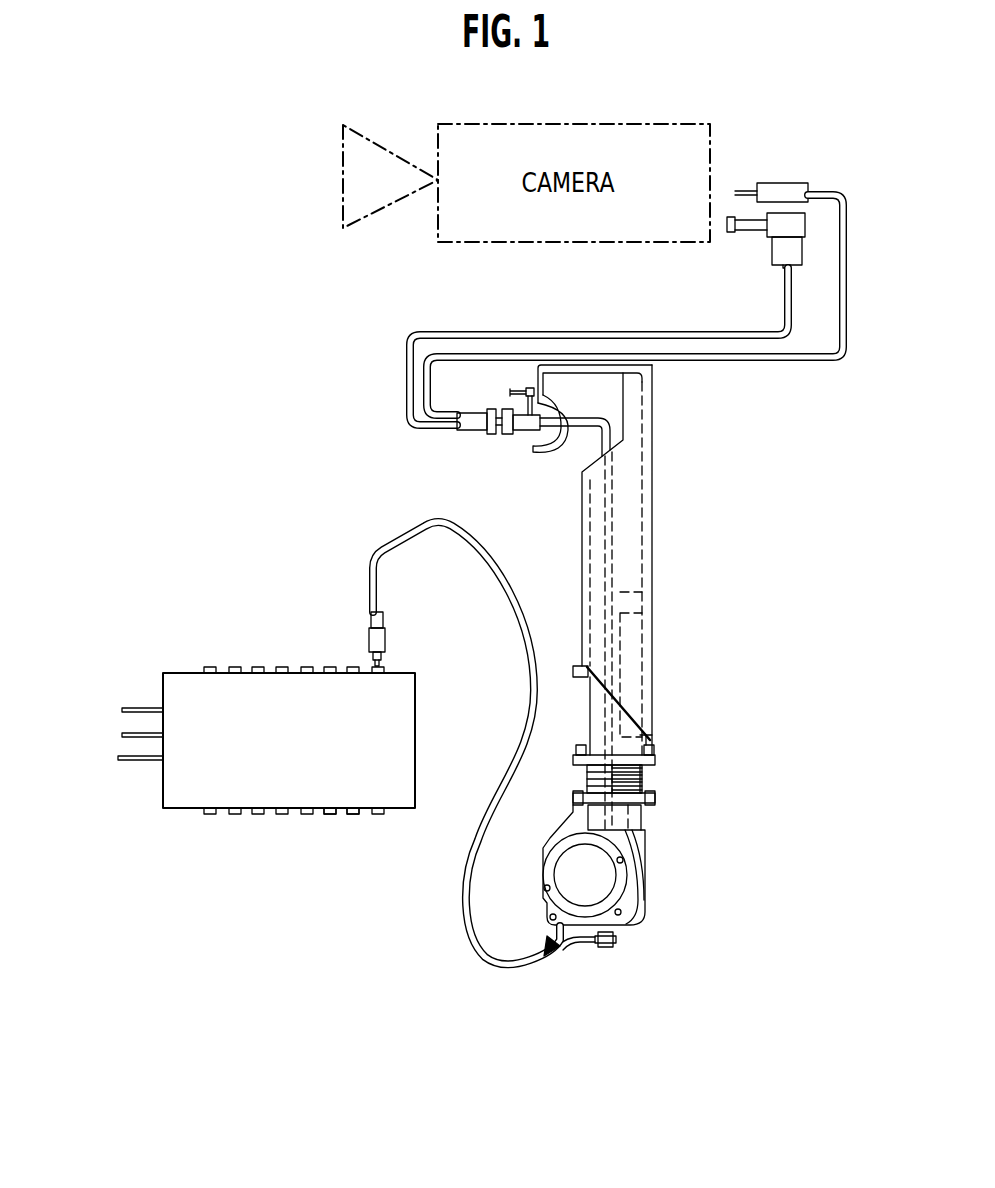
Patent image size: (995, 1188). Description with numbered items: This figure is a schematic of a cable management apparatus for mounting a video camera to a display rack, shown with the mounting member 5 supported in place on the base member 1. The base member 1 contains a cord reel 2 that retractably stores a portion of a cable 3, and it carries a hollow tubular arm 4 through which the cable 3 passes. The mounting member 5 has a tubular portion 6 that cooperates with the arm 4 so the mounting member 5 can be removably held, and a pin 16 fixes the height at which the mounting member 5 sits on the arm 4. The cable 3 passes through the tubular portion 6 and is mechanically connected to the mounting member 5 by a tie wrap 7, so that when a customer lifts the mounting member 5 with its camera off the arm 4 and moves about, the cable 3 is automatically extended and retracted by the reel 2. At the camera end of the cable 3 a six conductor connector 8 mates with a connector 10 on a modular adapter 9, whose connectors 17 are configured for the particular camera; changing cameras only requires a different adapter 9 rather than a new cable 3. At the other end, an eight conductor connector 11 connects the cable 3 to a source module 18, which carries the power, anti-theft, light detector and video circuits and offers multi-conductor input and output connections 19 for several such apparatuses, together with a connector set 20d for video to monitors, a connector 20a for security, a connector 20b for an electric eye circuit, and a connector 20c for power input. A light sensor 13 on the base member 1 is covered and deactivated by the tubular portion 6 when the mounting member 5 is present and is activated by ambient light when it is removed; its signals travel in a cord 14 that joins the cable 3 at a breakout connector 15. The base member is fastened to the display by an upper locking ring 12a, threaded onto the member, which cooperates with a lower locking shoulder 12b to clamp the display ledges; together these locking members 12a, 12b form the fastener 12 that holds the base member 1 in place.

The base member 1 is at (645, 860).
The cord reel 2 is at (565, 878).
The cable 3 is at (603, 720).
The hollow tubular arm 4 is at (648, 573).
The mounting member 5 is at (590, 365).
The tubular portion 6 is at (652, 522).
The tie wrap 7 is at (528, 388).
The six conductor connector 8 is at (525, 436).
The modular adapter 9 is at (763, 340).
The connector 10 is at (490, 432).
The eight conductor connector 11 is at (386, 640).
The coupling 12 is at (588, 778).
The upper locking ring 12a is at (655, 760).
The lower locking shoulder 12b is at (655, 798).
The light sensor 13 is at (650, 738).
The cord 14 is at (645, 925).
The breakout connector 15 is at (562, 952).
The pin 16 is at (580, 666).
The connectors 17 is at (781, 214).
The source module 18 is at (416, 742).
The input and output connections 19 is at (234, 667).
The connector 20a is at (122, 708).
The connector 20b is at (122, 735).
The connector 20c is at (118, 758).
The connector set 20d is at (353, 814).